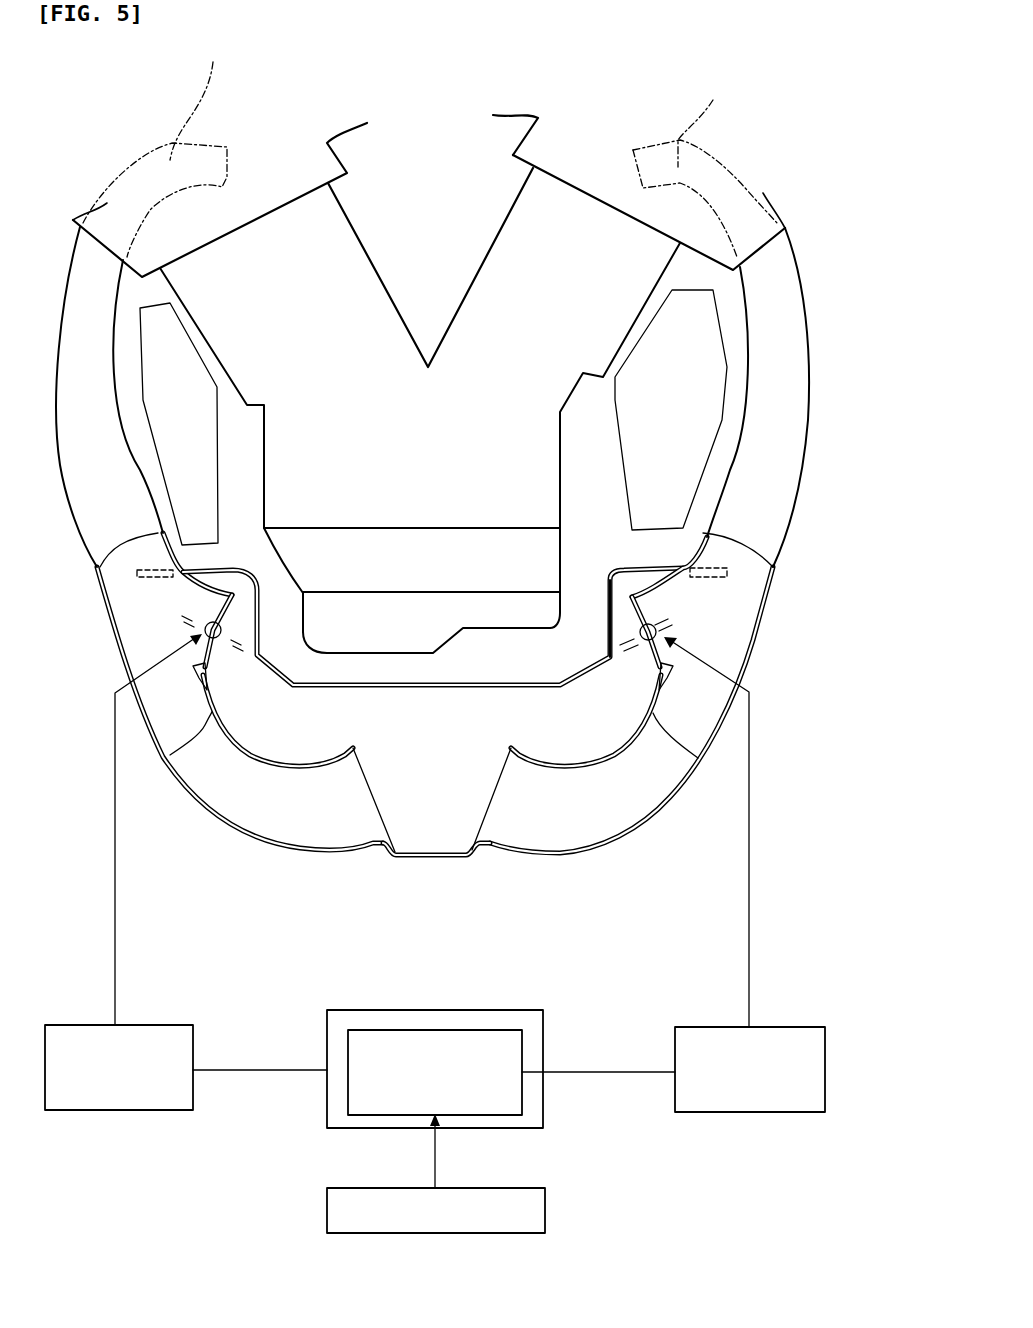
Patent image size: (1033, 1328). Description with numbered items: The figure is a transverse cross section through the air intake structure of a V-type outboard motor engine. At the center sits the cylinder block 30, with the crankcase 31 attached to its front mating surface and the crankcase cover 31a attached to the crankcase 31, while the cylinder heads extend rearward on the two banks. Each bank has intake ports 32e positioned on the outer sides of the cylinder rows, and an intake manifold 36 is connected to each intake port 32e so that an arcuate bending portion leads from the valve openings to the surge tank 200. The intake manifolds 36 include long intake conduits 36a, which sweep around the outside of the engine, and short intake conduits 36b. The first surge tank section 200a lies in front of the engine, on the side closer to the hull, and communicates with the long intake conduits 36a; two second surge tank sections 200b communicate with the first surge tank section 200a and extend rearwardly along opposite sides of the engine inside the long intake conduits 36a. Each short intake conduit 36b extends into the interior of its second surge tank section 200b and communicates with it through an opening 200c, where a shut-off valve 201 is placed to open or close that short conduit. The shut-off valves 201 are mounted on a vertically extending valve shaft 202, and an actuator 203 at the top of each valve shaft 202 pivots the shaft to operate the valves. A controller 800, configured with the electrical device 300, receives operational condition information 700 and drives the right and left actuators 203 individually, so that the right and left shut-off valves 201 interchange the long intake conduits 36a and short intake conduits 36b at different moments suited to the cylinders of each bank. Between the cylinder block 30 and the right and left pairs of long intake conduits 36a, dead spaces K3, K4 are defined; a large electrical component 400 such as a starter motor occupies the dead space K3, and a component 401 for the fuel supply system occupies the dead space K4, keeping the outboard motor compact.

The cylinder block 30 is at (548, 487).
The crankcase 31 is at (453, 605).
The crankcase cover 31a is at (425, 653).
The intake port 32e is at (430, 149).
The intake manifold 36 is at (800, 530).
The long intake conduit 36a is at (237, 832).
The short intake conduit 36b is at (208, 562).
The surge tank 200 is at (285, 882).
The first surge tank section 200a is at (415, 838).
The second surge tank section 200b is at (257, 717).
The opening 200c is at (202, 605).
The shut-off valve 201 is at (187, 657).
The valve shaft 202 is at (300, 587).
The actuator 203 is at (135, 1113).
The electrical device 300 is at (474, 1060).
The electrical component 400 is at (193, 424).
The component for a fuel supply system 401 is at (699, 410).
The operational condition information 700 is at (487, 1124).
The controller 800 is at (460, 1028).
The dead space K3 is at (148, 486).
The dead space K4 is at (730, 412).